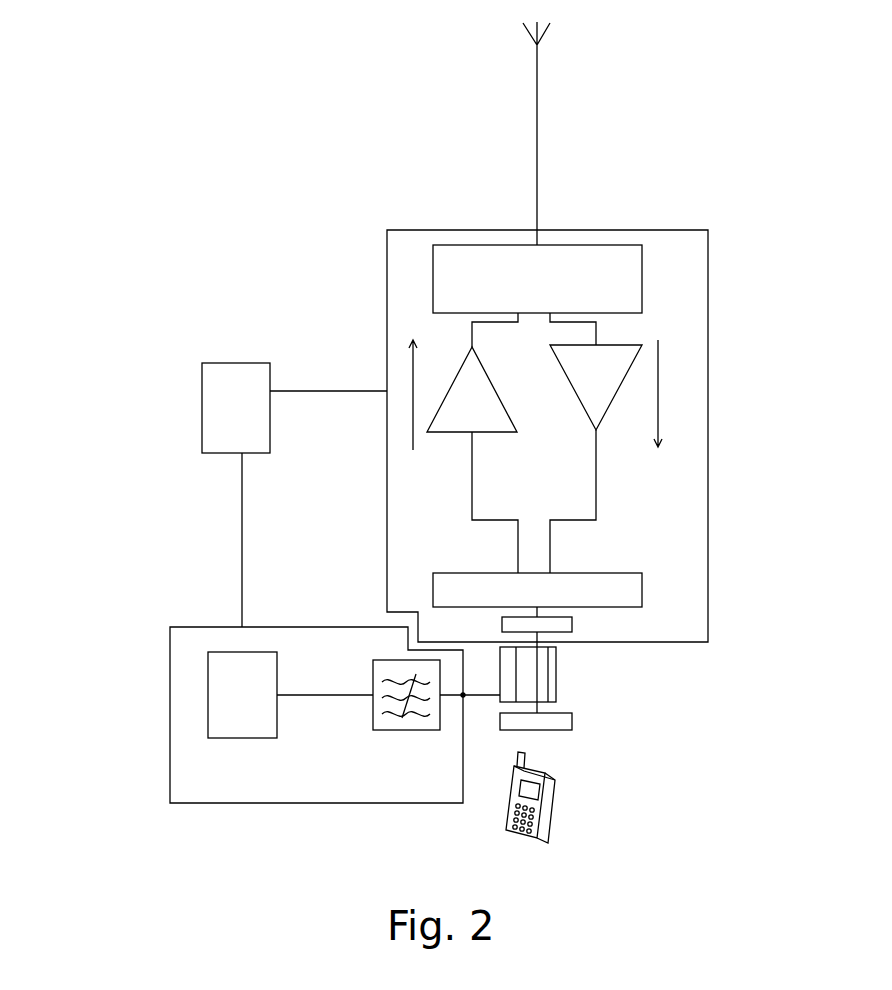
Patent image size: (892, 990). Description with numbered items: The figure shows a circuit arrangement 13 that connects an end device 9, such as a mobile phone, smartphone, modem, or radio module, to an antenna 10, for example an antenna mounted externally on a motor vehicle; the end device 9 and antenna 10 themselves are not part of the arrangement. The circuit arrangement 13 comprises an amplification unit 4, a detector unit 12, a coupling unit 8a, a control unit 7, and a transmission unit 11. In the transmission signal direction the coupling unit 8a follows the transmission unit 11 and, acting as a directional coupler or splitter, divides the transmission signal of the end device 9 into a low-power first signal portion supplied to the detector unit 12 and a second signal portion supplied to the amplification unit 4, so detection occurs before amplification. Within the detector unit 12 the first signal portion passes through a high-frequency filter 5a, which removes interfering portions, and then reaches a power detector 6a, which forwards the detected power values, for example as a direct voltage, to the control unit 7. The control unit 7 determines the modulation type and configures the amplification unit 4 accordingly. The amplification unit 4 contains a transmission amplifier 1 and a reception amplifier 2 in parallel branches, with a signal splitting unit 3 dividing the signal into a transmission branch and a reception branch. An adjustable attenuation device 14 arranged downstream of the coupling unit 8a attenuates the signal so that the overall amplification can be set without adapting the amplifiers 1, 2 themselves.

The transmission amplifier 1 is at (472, 389).
The reception amplifier 2 is at (596, 387).
The signal splitting unit 3 is at (537, 426).
The amplification unit 4 is at (687, 230).
The high-frequency filter 5a is at (410, 730).
The power detector 6a is at (290, 695).
The control unit 7 is at (294, 495).
The coupling unit 8a is at (556, 668).
The end device 9 is at (557, 795).
The antenna 10 is at (540, 70).
The transmission unit 11 is at (572, 718).
The detector unit 12 is at (170, 715).
The circuit arrangement 13 is at (718, 229).
The attenuation device 14 is at (572, 620).